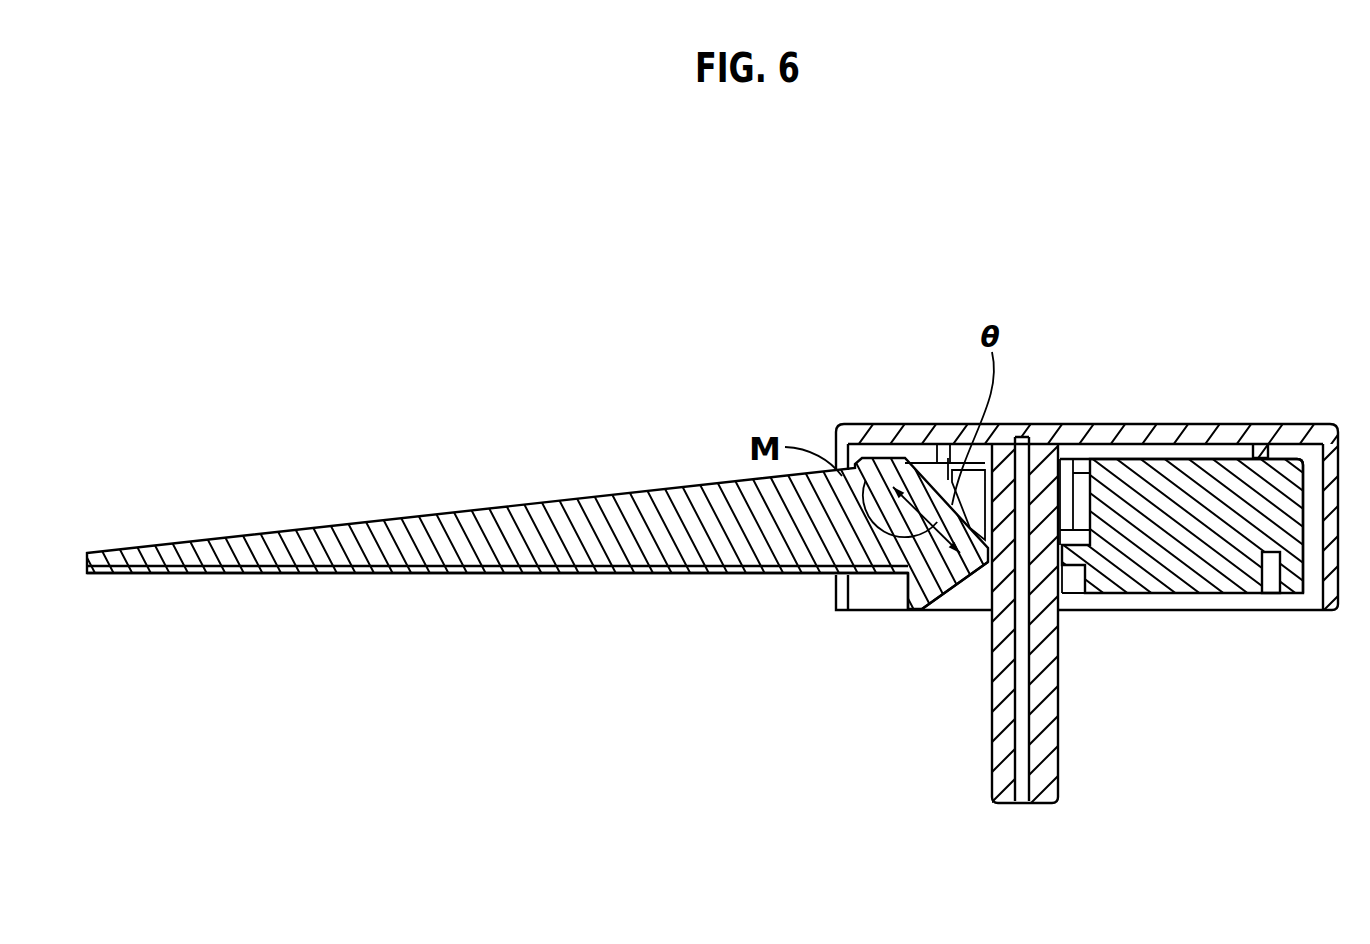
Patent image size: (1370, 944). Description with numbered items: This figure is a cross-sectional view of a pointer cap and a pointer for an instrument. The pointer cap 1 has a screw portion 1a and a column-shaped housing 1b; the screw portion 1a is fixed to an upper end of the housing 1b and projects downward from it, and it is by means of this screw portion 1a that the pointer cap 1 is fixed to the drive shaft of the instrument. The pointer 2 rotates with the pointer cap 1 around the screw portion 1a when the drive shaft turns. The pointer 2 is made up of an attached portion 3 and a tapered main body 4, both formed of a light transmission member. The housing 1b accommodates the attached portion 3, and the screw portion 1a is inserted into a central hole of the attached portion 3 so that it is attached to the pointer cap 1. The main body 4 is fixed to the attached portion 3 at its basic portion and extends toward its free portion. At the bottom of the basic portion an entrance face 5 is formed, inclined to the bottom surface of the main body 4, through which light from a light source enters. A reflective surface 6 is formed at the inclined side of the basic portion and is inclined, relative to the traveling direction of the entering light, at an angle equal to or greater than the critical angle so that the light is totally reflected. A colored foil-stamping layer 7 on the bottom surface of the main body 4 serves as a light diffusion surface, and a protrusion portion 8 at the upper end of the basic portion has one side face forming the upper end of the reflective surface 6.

The pointer cap 1 is at (1052, 418).
The screw portion 1a is at (1045, 733).
The column-shaped housing 1b is at (1262, 432).
The pointer 2 is at (543, 495).
The attached portion 3 is at (1130, 572).
The main body 4 is at (650, 520).
The entrance face 5 is at (957, 585).
The reflective surface 6 is at (947, 478).
The foil-stamping layer 7 is at (546, 577).
The protrusion portion 8 is at (900, 455).